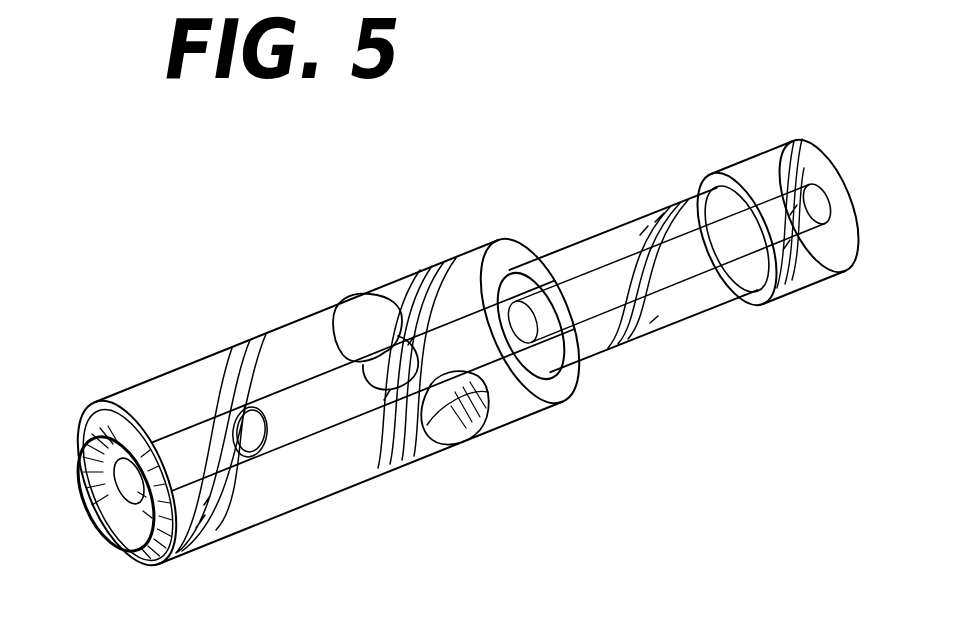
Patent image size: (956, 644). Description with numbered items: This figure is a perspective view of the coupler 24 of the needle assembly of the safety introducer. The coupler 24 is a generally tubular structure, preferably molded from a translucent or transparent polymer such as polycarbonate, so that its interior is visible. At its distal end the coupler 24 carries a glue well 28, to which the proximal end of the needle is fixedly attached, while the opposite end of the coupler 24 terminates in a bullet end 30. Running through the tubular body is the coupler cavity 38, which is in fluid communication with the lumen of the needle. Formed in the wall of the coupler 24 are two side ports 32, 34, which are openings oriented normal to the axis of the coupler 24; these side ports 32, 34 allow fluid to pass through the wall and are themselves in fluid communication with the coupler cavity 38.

The coupler 24 is at (197, 357).
The glue well 28 is at (120, 500).
The bullet end 30 is at (798, 258).
The side port 32 is at (453, 413).
The side port 34 is at (357, 328).
The coupler cavity 38 is at (312, 412).